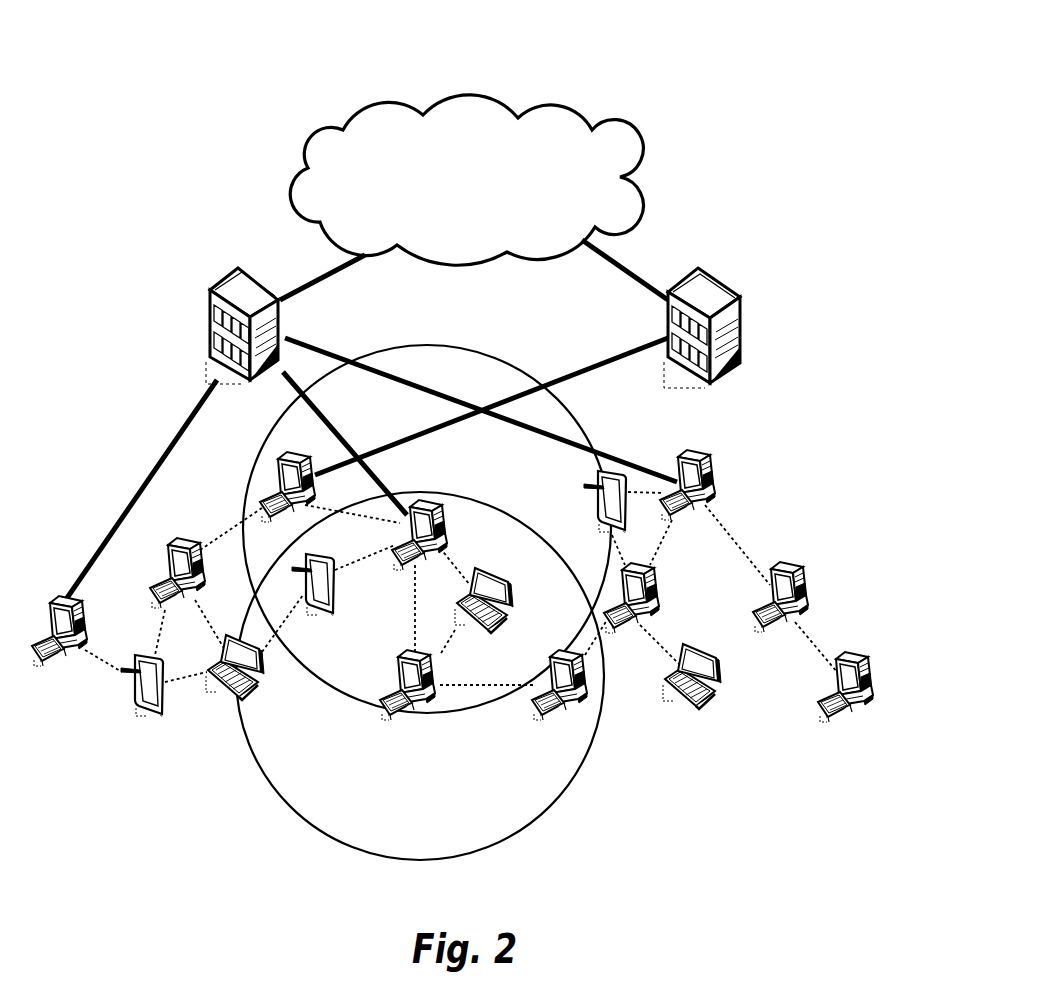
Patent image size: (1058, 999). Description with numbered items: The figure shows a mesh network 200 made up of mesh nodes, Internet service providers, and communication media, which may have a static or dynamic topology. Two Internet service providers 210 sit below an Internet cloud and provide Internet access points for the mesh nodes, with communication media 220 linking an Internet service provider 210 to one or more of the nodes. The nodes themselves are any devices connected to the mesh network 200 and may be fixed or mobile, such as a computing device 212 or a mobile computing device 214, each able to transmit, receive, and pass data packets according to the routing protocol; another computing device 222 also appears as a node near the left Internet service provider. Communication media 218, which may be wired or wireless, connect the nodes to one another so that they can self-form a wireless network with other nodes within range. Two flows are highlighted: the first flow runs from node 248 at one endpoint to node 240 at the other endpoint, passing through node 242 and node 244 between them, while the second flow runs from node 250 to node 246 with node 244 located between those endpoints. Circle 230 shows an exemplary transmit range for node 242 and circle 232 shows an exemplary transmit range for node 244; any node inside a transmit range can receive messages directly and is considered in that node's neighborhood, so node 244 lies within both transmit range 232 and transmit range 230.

The mesh network 200 is at (722, 68).
The Internet service provider 210 is at (657, 378).
The computing device 212 is at (655, 697).
The mobile computing device 214 is at (128, 720).
The communication media 218 is at (212, 544).
The communication media 220 is at (585, 363).
The computer 222 is at (88, 602).
The circle 230 is at (298, 835).
The circle 232 is at (332, 700).
The node 240 is at (533, 718).
The node 242 is at (395, 718).
The node 244 is at (425, 489).
The node 246 is at (500, 568).
The node 248 is at (262, 466).
The node 250 is at (345, 608).